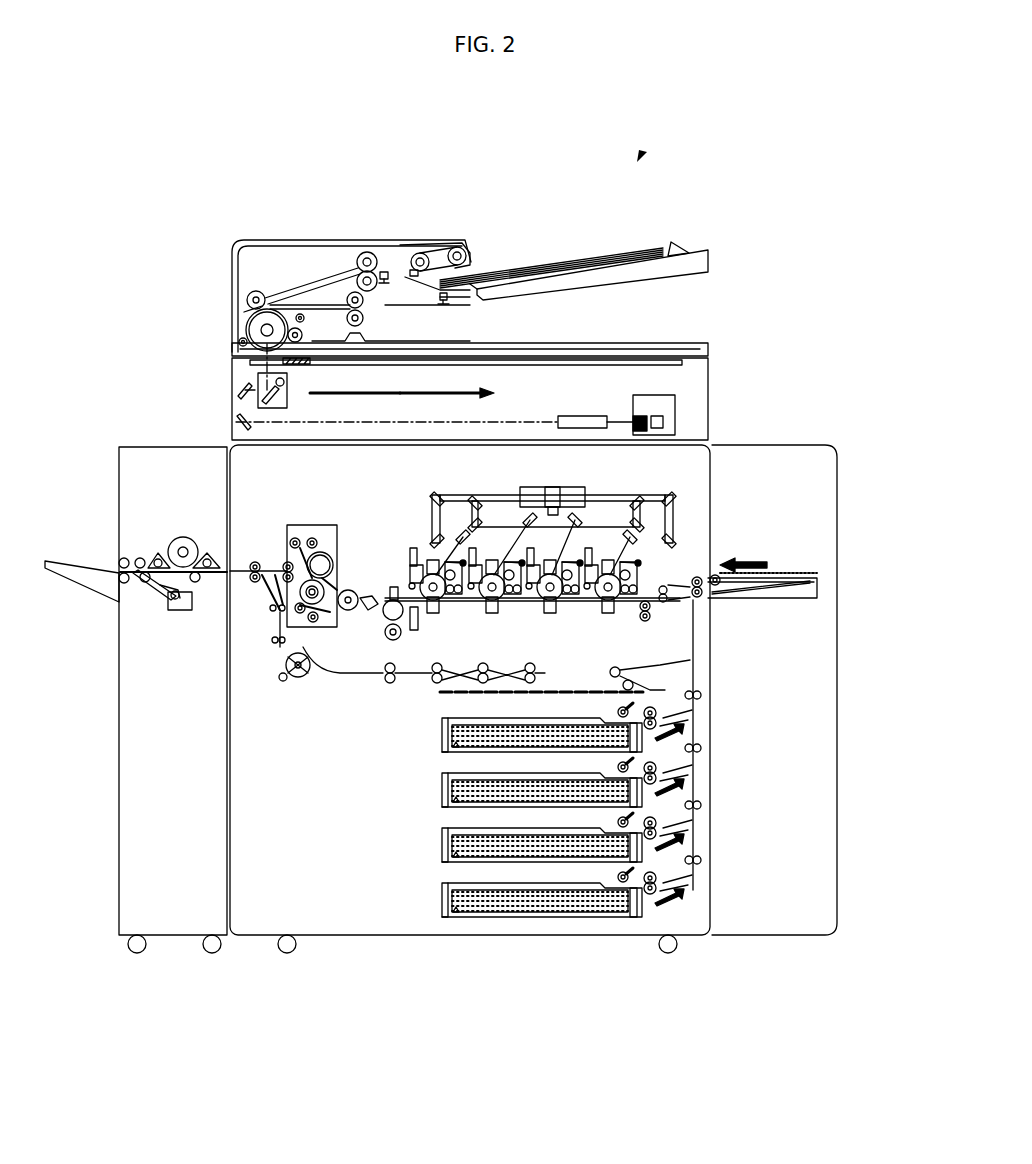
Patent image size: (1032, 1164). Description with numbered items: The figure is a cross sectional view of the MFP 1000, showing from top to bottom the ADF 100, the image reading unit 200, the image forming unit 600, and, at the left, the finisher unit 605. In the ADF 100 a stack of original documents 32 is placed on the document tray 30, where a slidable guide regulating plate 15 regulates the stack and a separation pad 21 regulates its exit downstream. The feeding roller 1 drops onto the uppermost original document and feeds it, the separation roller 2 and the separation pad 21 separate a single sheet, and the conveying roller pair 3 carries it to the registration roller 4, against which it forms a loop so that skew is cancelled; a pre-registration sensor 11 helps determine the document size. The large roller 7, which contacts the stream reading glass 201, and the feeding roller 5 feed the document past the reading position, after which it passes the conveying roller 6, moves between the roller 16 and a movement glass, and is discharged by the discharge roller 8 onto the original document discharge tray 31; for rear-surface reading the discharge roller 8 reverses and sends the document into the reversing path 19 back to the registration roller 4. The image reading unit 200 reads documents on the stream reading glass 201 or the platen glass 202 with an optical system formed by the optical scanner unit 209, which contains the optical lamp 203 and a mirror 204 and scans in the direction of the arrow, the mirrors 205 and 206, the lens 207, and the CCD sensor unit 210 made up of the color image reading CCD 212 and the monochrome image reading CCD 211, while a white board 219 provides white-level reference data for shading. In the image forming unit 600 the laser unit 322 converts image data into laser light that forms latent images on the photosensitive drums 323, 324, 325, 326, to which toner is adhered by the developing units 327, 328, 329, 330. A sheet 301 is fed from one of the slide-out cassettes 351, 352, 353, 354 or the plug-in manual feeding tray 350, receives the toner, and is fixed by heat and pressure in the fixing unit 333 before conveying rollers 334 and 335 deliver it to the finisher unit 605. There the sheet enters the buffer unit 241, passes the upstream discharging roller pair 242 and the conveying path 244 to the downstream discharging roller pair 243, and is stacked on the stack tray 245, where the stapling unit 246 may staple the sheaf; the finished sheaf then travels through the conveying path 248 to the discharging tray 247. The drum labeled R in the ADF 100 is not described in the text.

The MFP 1000 is at (639, 158).
The ADF 100 is at (333, 240).
The feeding roller 1 is at (475, 262).
The separation roller 2 is at (420, 253).
The conveying roller pair 3 is at (357, 262).
The registration roller 4 is at (257, 291).
The feeding roller 5 is at (239, 342).
The conveying roller 6 is at (270, 340).
The large roller 7 is at (250, 310).
The discharge roller 8 is at (363, 318).
The pre-registration sensor 11 is at (385, 272).
The guide regulating plate 15 is at (680, 246).
The roller 16 is at (298, 314).
The reversing path 19 is at (318, 305).
The separation pad 21 is at (414, 277).
The document tray 30 is at (650, 270).
The original document discharge tray 31 is at (472, 347).
The original document 32 is at (600, 253).
The reading drum R is at (250, 332).
The image reading unit 200 is at (400, 445).
The stream reading glass 201 is at (250, 362).
The platen glass 202 is at (510, 365).
The optical lamp 203 is at (284, 382).
The mirror 204 is at (272, 405).
The mirror 205 is at (238, 386).
The mirror 206 is at (237, 422).
The lens 207 is at (583, 416).
The optical scanner unit 209 is at (287, 397).
The CCD sensor unit 210 is at (668, 395).
The monochrome image reading CCD 211 is at (643, 431).
The color image reading CCD 212 is at (663, 422).
The white board 219 is at (310, 362).
The buffer unit 241 is at (178, 538).
The upstream discharging roller pair 242 is at (138, 558).
The downstream discharging roller pair 243 is at (122, 558).
The conveying path 244 is at (143, 583).
The stack tray 245 is at (152, 588).
The stapling unit 246 is at (185, 610).
The discharging tray 247 is at (70, 580).
The conveying path 248 is at (120, 575).
The sheet 301 is at (785, 573).
The laser unit 322 is at (588, 495).
The photosensitive drum 323 is at (608, 600).
The photosensitive drum 324 is at (550, 600).
The photosensitive drum 325 is at (492, 600).
The photosensitive drum 326 is at (433, 600).
The developing unit 327 is at (648, 619).
The developing unit 328 is at (568, 595).
The developing unit 329 is at (510, 595).
The developing unit 330 is at (450, 595).
The fixing unit 333 is at (337, 535).
The conveying roller 334 is at (288, 565).
The conveying roller 335 is at (268, 612).
The manual feeding tray 350 is at (752, 598).
The cassette 351 is at (441, 733).
The cassette 352 is at (441, 788).
The cassette 353 is at (441, 843).
The cassette 354 is at (441, 898).
The image forming unit 600 is at (840, 445).
The finisher unit 605 is at (227, 966).